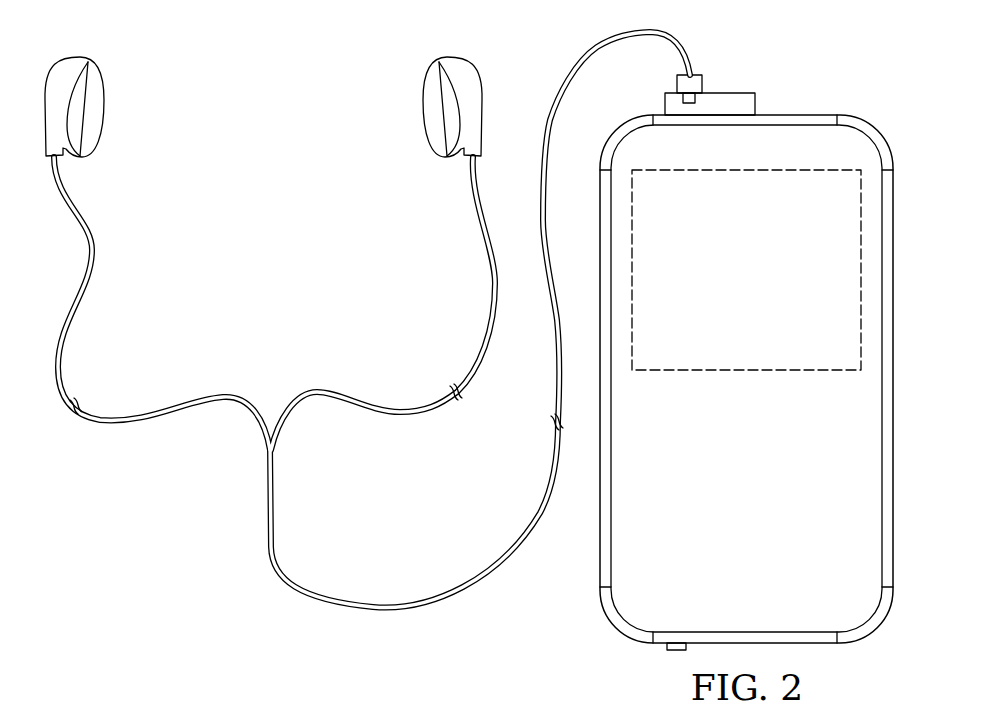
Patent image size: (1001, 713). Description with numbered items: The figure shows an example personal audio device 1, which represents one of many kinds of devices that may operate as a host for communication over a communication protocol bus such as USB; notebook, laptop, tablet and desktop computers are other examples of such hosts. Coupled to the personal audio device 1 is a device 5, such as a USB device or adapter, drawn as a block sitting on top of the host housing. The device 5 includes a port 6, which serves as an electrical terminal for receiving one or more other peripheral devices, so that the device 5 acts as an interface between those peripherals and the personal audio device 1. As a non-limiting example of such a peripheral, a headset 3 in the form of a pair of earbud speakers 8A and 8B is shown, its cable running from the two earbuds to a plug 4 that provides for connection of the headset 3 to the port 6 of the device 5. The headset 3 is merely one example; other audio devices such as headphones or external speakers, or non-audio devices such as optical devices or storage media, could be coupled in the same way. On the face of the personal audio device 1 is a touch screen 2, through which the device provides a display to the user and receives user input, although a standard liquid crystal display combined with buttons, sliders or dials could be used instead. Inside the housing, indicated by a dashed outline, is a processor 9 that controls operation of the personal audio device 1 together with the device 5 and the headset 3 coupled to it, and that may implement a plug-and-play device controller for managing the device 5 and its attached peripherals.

The personal audio device 1 is at (878, 129).
The touch screen 2 is at (754, 530).
The headset 3 is at (222, 395).
The plug 4 is at (677, 83).
The device 5 is at (757, 103).
The port 6 is at (695, 101).
The earbud speaker 8A is at (450, 56).
The earbud speaker 8B is at (77, 56).
The processor 9 is at (765, 372).